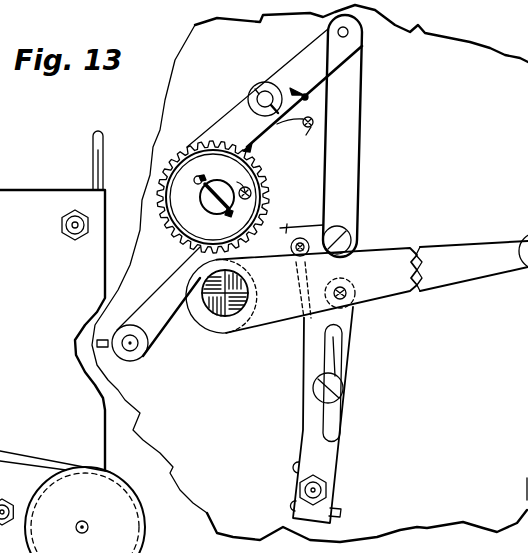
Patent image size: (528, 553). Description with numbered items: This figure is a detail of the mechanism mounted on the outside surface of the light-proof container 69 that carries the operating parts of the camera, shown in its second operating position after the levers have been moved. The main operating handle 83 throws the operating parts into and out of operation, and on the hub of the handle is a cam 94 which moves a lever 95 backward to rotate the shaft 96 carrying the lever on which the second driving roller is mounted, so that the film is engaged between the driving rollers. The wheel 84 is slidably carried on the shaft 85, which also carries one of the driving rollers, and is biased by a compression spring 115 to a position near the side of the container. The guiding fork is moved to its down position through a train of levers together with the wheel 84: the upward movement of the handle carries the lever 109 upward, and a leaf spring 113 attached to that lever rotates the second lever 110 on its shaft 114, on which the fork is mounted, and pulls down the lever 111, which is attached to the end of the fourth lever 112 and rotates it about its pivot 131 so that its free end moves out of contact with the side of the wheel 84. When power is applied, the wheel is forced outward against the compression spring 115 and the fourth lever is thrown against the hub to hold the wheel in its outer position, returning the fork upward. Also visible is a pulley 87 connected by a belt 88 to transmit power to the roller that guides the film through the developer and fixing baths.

The light-proof container 69 is at (54, 300).
The main operating handle 83 is at (468, 250).
The wheel 84 is at (258, 167).
The shaft 85 is at (200, 202).
The pulley 87 is at (57, 492).
The belt 88 is at (55, 449).
The cam 94 is at (212, 307).
The lever 95 is at (153, 290).
The shaft 96 is at (135, 347).
The lever 109 is at (328, 459).
The second lever 110 is at (313, 206).
The lever 111 is at (350, 191).
The fourth lever 112 is at (293, 49).
The leaf spring 113 is at (308, 333).
The shaft 114 is at (305, 206).
The compression spring 115 is at (222, 191).
The pivot 131 is at (257, 100).